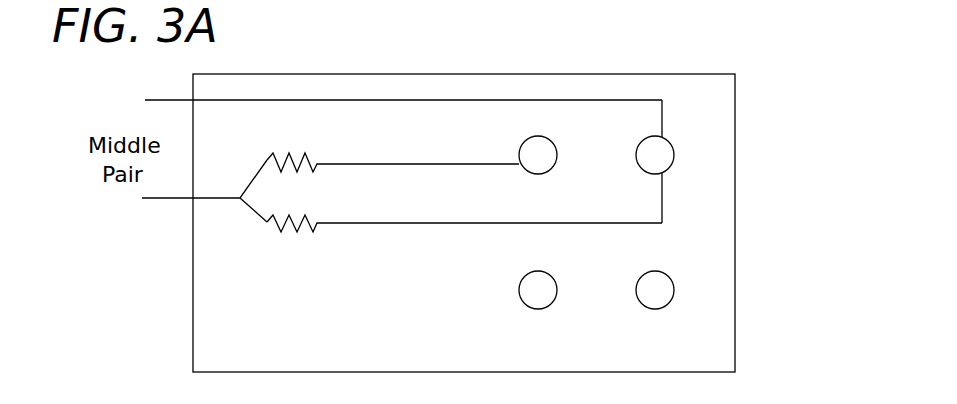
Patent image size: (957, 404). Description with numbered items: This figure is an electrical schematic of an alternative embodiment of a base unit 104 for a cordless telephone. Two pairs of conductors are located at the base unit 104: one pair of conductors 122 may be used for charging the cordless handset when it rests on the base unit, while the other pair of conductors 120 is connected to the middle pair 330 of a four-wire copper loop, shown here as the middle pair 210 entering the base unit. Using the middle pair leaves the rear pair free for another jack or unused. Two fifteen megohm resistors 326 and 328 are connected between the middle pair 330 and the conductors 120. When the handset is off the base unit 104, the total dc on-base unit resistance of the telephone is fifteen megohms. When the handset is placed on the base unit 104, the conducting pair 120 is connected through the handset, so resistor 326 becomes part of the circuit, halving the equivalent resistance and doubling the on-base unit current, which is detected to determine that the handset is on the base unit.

The base unit 104 is at (735, 123).
The middle pair 210 is at (145, 100).
The middle pair 330 is at (250, 100).
The resistor 326 is at (289, 153).
The resistor 328 is at (302, 229).
The conductors 120 is at (655, 174).
The conductors 122 is at (655, 309).